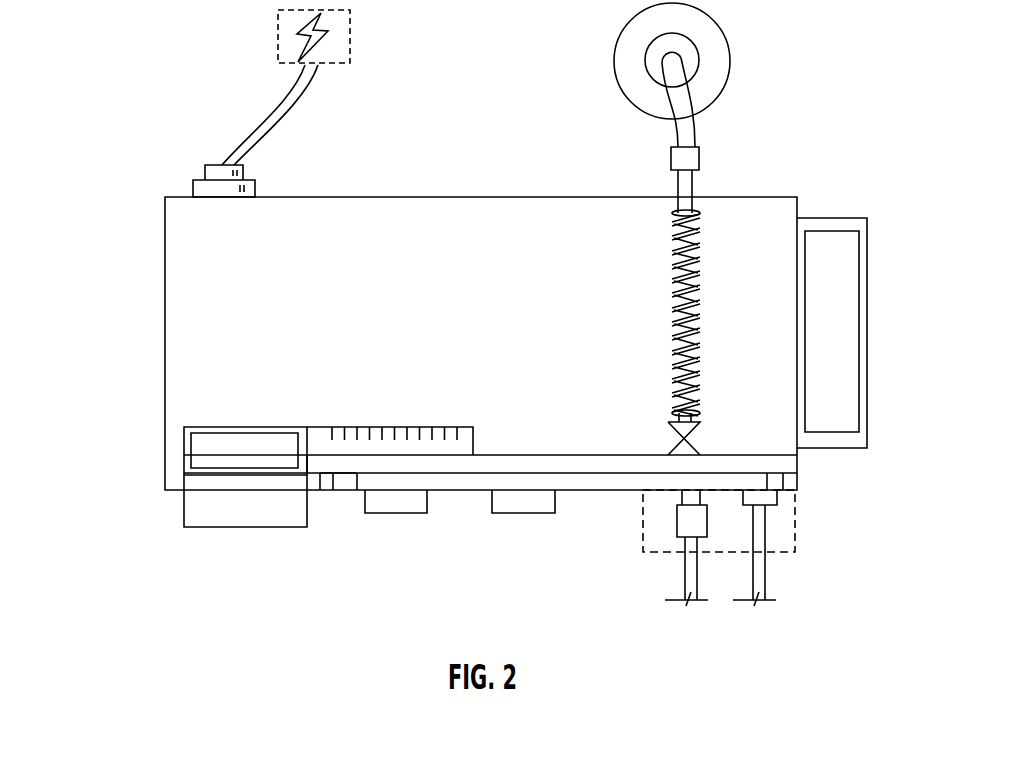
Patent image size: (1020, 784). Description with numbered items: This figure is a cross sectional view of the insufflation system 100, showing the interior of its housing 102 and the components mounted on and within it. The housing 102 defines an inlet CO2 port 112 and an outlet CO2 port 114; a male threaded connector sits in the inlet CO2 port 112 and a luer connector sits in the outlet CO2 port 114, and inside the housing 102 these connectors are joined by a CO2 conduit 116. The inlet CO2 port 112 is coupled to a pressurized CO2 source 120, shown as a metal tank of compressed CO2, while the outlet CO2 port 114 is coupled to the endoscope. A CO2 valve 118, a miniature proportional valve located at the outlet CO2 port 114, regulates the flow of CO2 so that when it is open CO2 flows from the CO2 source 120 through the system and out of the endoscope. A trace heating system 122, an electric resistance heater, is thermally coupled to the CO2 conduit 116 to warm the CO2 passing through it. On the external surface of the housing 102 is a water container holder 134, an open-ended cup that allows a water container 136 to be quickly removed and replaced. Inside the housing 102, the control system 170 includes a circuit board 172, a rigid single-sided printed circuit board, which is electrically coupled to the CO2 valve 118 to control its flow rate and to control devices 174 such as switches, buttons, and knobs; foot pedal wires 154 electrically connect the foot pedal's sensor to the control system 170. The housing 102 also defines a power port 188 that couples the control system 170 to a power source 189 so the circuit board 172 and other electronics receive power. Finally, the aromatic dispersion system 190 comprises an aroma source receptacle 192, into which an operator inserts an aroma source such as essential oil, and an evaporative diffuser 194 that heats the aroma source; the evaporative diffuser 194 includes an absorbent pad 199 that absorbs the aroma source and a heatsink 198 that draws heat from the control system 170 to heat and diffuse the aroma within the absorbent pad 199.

The insufflation system 100 is at (88, 164).
The housing 102 is at (163, 290).
The inlet CO2 port 112 is at (697, 172).
The outlet CO2 port 114 is at (680, 500).
The CO2 conduit 116 is at (670, 283).
The CO2 valve 118 is at (702, 425).
The pressurized CO2 source 120 is at (728, 40).
The trace heating system 122 is at (698, 222).
The water container holder 134 is at (867, 387).
The water container 136 is at (837, 433).
The foot pedal wires 154 is at (765, 562).
The control system 170 is at (564, 474).
The circuit board 172 is at (357, 490).
The control devices 174 is at (560, 530).
The power port 188 is at (196, 185).
The power source 189 is at (278, 48).
The aromatic dispersion system 190 is at (145, 427).
The aroma source receptacle 192 is at (205, 527).
The evaporative diffuser 194 is at (184, 436).
The heatsink 198 is at (327, 442).
The absorbent pad 199 is at (207, 443).